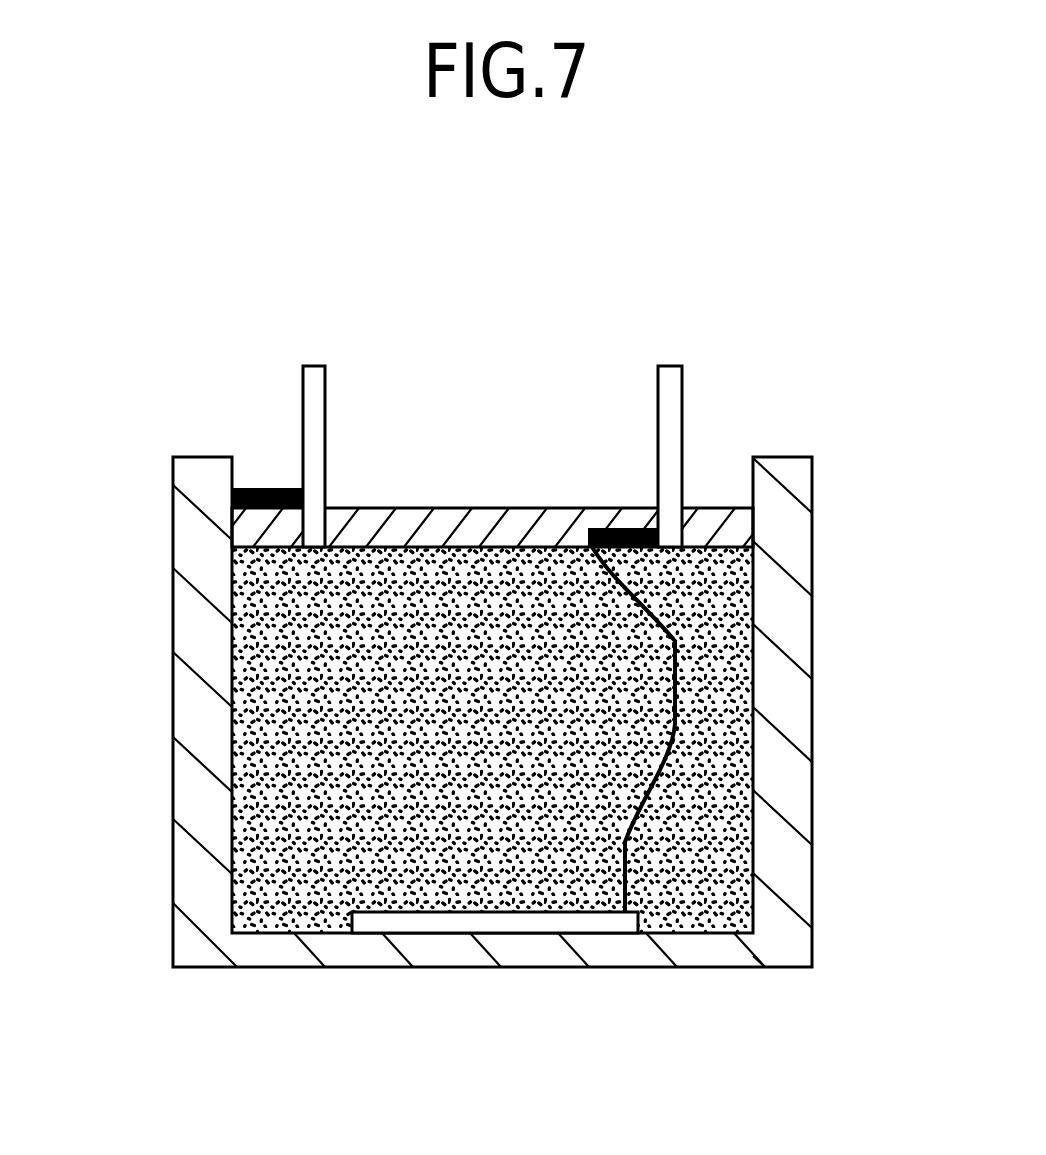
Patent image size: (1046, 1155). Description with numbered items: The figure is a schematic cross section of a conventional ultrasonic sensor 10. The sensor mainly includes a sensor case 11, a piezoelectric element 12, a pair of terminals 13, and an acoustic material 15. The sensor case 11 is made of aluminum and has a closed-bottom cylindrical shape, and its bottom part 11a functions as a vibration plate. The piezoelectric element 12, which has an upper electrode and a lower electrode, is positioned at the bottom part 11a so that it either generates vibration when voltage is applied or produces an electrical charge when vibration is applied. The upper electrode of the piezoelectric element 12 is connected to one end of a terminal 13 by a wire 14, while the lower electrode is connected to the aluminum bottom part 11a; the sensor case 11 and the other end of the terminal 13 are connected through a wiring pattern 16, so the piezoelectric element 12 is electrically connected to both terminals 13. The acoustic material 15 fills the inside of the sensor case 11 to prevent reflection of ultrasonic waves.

The ultrasonic sensor 10 is at (100, 275).
The sensor case 11 is at (834, 852).
The bottom part 11a is at (380, 955).
The piezoelectric element 12 is at (588, 922).
The terminals 13 is at (325, 383).
The wire 14 is at (673, 712).
The acoustic material 15 is at (310, 714).
The wiring pattern 16 is at (263, 488).